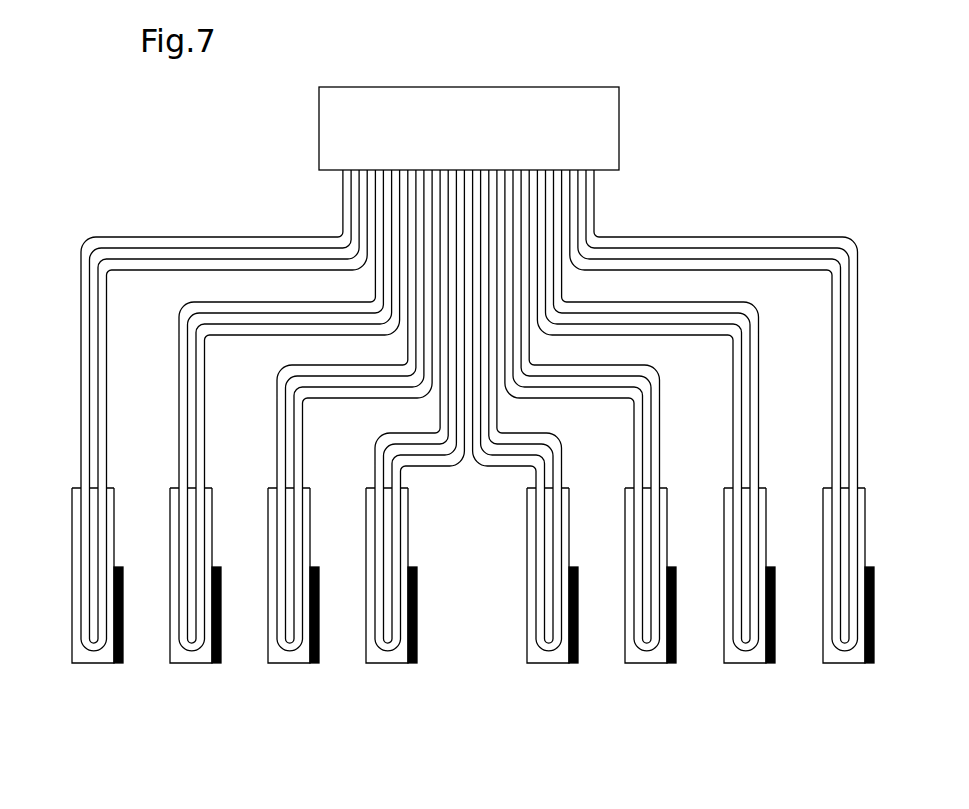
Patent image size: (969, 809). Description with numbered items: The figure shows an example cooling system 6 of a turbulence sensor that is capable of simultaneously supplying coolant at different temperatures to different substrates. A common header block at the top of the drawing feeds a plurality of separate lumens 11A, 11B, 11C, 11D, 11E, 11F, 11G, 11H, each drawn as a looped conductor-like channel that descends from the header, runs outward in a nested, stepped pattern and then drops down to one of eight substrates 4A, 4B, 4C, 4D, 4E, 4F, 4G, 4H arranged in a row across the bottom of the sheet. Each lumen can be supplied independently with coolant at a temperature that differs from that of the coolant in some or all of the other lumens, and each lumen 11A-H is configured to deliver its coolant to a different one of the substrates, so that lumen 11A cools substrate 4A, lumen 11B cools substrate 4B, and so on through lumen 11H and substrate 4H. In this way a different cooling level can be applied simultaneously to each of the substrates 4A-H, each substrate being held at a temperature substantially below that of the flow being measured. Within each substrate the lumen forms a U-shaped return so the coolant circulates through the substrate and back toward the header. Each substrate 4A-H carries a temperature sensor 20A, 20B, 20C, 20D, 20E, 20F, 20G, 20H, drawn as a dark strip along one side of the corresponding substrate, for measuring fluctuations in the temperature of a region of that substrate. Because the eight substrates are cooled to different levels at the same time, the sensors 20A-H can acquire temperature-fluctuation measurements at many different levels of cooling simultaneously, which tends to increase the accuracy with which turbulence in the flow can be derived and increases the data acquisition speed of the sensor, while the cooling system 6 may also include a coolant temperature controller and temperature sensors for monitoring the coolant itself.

The cooling system 6 is at (771, 126).
The lumen 11A is at (200, 238).
The lumen 11B is at (182, 345).
The lumen 11C is at (277, 406).
The lumen 11D is at (378, 465).
The lumen 11E is at (560, 465).
The lumen 11F is at (660, 405).
The lumen 11G is at (757, 332).
The lumen 11H is at (735, 238).
The substrate 4A is at (86, 664).
The substrate 4B is at (184, 664).
The substrate 4C is at (282, 664).
The substrate 4D is at (380, 664).
The substrate 4E is at (541, 664).
The substrate 4F is at (639, 664).
The substrate 4G is at (738, 664).
The substrate 4H is at (837, 664).
The temperature sensor 20A is at (122, 598).
The temperature sensor 20B is at (220, 598).
The temperature sensor 20C is at (318, 598).
The temperature sensor 20D is at (416, 598).
The temperature sensor 20E is at (577, 598).
The temperature sensor 20F is at (675, 598).
The temperature sensor 20G is at (774, 598).
The temperature sensor 20H is at (873, 598).